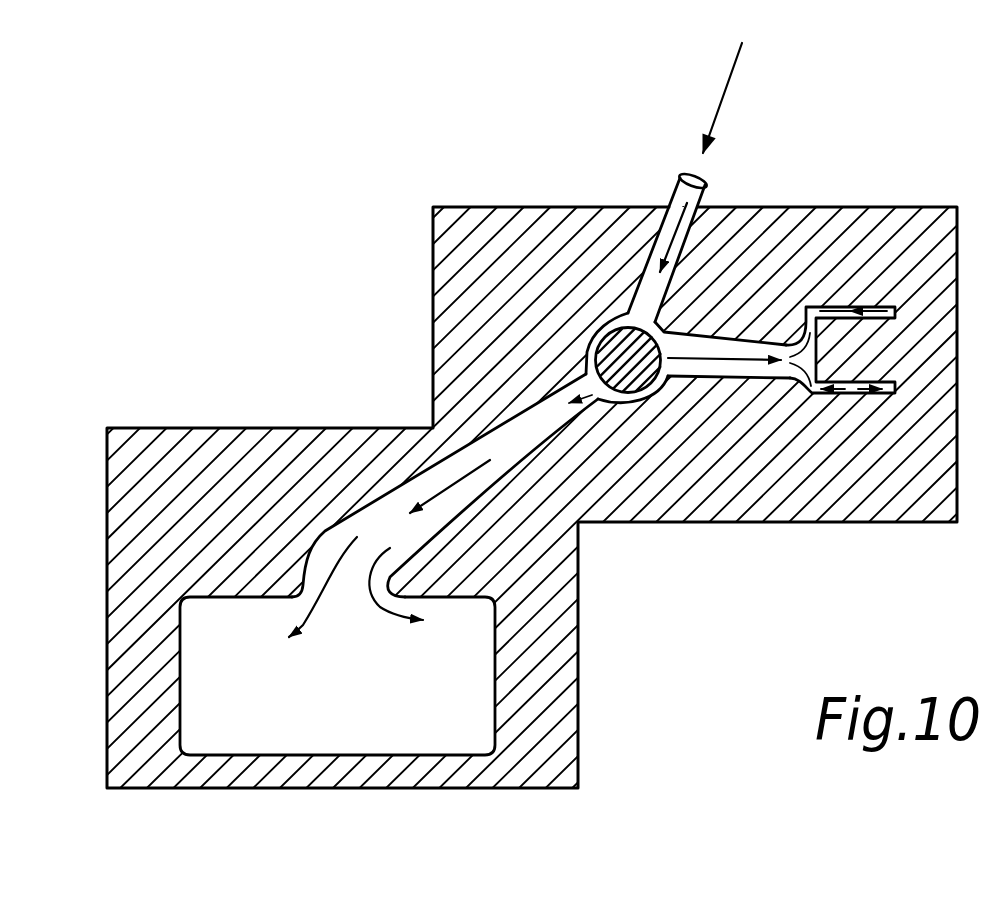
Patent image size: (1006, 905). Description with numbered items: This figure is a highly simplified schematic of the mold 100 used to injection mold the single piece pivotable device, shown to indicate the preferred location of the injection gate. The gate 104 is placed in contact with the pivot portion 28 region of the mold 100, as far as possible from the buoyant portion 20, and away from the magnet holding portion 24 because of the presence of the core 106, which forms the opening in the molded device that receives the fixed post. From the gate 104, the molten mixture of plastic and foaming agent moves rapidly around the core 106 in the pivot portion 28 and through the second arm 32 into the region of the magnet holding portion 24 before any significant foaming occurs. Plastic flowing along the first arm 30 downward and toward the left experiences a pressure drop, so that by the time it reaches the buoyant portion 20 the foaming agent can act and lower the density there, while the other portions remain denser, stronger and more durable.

The mold 100 is at (506, 208).
The buoyant portion 20 is at (398, 745).
The first arm 30 is at (487, 450).
The pivot portion 28 is at (658, 390).
The core 106 is at (619, 335).
The gate 104 is at (677, 198).
The second arm 32 is at (735, 350).
The magnet holding portion 24 is at (884, 307).